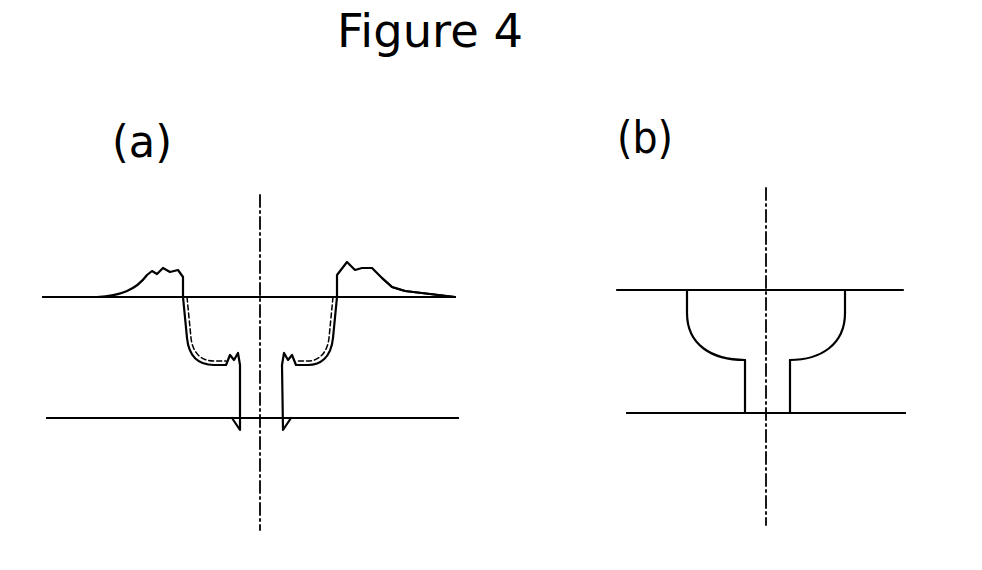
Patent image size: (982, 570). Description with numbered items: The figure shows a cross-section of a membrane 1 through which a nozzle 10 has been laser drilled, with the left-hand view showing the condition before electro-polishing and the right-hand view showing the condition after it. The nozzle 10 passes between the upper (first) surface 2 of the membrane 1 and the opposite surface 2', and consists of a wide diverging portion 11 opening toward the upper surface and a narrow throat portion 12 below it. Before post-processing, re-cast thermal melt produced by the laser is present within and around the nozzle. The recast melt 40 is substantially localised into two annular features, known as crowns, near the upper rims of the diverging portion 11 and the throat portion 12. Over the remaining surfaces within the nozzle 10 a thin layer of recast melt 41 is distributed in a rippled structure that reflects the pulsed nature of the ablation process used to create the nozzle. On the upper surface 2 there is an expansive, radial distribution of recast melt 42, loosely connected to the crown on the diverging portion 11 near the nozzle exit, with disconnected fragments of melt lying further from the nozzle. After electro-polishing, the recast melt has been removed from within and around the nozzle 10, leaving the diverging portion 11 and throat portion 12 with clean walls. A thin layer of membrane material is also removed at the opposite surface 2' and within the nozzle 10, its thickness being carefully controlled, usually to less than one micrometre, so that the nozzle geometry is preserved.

The membrane 1 is at (392, 354).
The upper (first) surface 2 is at (246, 247).
The opposite surface 2' is at (476, 482).
The nozzle 10 is at (481, 365).
The diverging portion 11 is at (190, 350).
The throat portion 12 is at (228, 407).
The recast melt 40 is at (347, 262).
The thin layer of recast melt 41 is at (188, 333).
The recast melt distribution on upper surface 42 is at (407, 288).